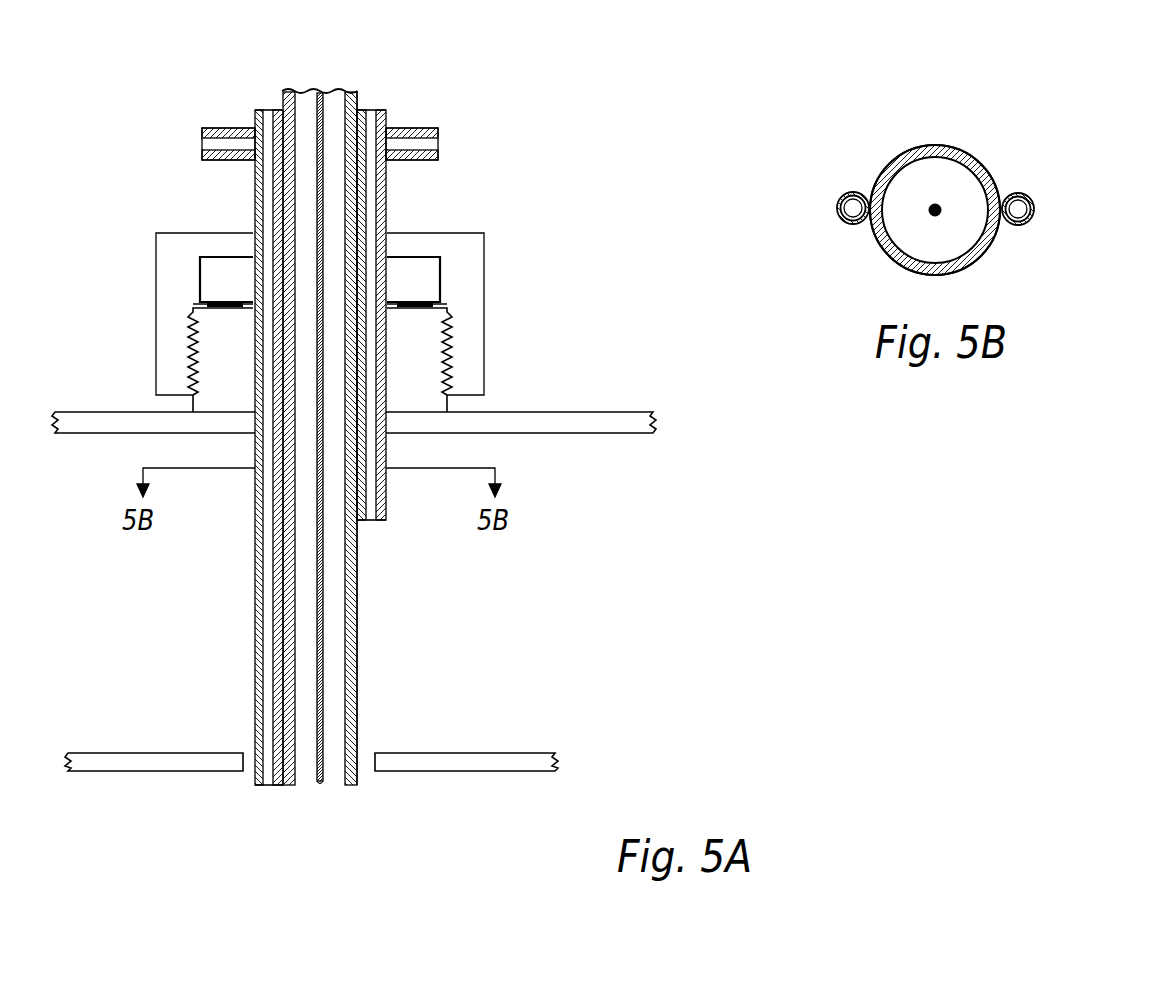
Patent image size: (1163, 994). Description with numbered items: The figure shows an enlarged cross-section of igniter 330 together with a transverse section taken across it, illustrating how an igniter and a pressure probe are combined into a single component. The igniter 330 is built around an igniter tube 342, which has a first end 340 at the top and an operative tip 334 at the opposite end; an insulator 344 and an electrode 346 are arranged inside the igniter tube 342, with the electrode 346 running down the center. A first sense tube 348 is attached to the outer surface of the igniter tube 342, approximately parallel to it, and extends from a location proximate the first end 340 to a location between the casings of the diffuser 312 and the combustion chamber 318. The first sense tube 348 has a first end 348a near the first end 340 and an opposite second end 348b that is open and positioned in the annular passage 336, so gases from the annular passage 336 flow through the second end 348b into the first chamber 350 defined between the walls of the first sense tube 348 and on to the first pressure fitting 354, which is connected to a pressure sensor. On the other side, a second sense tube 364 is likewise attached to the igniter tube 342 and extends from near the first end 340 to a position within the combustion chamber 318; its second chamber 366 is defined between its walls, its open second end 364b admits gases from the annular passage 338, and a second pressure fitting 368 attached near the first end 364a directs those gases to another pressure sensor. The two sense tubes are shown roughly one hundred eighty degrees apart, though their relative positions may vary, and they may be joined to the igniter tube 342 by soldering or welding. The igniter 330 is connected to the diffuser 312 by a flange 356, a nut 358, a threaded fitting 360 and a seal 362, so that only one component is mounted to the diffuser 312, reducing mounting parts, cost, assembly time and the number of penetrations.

In FIG. 5A, the diffuser 312 is at (594, 395).
In FIG. 5A, the combustion chamber 318 is at (522, 735).
In FIG. 5A, the igniter 330 is at (133, 99).
In FIG. 5A, the operative tip 334 is at (320, 788).
In FIG. 5A, the annular passage 336 is at (100, 464).
In FIG. 5A, the annular passage 338 is at (113, 800).
In FIG. 5A, the first end 340 is at (334, 72).
In FIG. 5A, the igniter tube 342 is at (358, 613).
In FIG. 5B, the igniter tube 342 is at (998, 182).
In FIG. 5A, the insulator 344 is at (305, 280).
In FIG. 5B, the insulator 344 is at (913, 232).
In FIG. 5A, the electrode 346 is at (316, 98).
In FIG. 5B, the electrode 346 is at (933, 208).
In FIG. 5A, the first sense tube 348 is at (387, 180).
In FIG. 5B, the first sense tube 348 is at (1033, 200).
In FIG. 5A, the first end 348a is at (366, 110).
In FIG. 5A, the second end 348b is at (372, 524).
In FIG. 5A, the first pressure sense chamber 350 is at (372, 210).
In FIG. 5B, the first pressure sense chamber 350 is at (1017, 212).
In FIG. 5A, the first pressure fitting 354 is at (432, 130).
In FIG. 5A, the flange 356 is at (415, 282).
In FIG. 5A, the nut 358 is at (466, 346).
In FIG. 5A, the threaded fitting 360 is at (418, 400).
In FIG. 5A, the seal 362 is at (448, 301).
In FIG. 5A, the second sense tube 364 is at (257, 214).
In FIG. 5B, the second sense tube 364 is at (847, 222).
In FIG. 5A, the first end 364a is at (270, 110).
In FIG. 5A, the second end 364b is at (270, 788).
In FIG. 5A, the second pressure sense chamber 366 is at (270, 192).
In FIG. 5B, the second pressure sense chamber 366 is at (851, 208).
In FIG. 5A, the second pressure fitting 368 is at (213, 160).